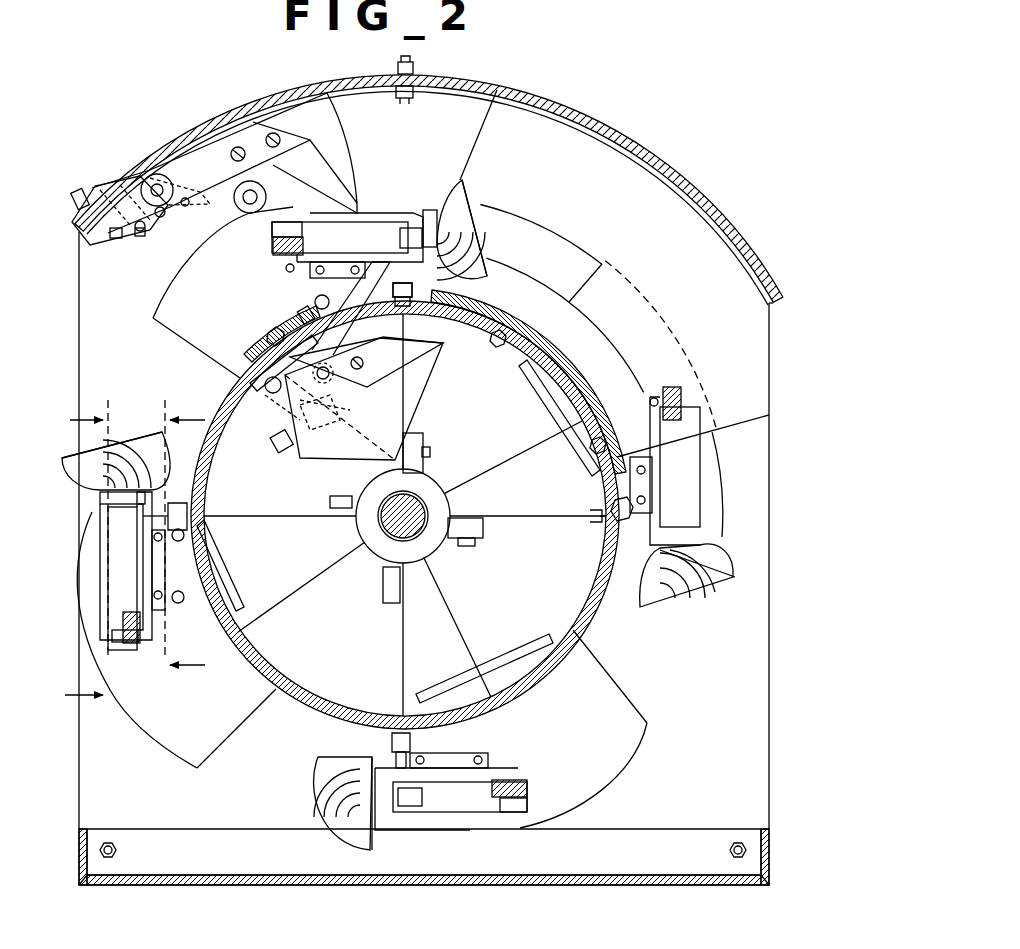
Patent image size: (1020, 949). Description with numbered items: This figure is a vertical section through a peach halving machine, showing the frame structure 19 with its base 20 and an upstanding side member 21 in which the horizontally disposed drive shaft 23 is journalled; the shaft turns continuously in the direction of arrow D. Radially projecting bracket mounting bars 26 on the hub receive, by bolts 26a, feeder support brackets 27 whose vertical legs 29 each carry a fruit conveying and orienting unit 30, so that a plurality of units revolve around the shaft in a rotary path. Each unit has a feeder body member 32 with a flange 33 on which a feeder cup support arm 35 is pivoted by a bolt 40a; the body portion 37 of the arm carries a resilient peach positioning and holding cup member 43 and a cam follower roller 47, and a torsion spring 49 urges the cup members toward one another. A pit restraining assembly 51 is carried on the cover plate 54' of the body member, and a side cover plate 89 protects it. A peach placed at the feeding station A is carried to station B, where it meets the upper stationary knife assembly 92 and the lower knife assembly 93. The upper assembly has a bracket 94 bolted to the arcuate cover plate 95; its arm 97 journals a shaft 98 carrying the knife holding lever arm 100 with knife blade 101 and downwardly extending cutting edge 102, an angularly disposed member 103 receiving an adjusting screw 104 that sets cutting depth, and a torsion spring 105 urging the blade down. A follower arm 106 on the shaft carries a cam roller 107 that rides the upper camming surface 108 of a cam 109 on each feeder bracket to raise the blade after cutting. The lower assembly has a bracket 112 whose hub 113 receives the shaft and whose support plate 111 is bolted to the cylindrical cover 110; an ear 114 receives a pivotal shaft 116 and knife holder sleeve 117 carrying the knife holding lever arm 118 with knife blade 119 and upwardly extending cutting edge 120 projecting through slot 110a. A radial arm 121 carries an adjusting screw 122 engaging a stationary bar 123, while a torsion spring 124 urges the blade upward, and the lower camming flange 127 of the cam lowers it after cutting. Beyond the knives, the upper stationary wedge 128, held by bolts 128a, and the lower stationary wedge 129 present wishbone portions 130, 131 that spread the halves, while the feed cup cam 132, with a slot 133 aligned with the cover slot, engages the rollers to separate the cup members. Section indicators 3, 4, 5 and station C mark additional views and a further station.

The frame structure 19 is at (105, 890).
The base 20 is at (180, 849).
The side member 21 is at (717, 755).
The drive shaft 23 is at (410, 525).
The bracket mounting bar 26 is at (424, 440).
The bolt 26a is at (431, 452).
The feeder support bracket 27 is at (525, 445).
The vertical leg 29 is at (403, 382).
The fruit conveying and orienting unit 30 is at (130, 430).
The feeder body member 32 is at (118, 547).
The flange 33 is at (112, 634).
The feeder cup support arm 35 is at (270, 258).
The body portion 37 is at (150, 565).
The bolt 40a is at (652, 400).
The peach positioning and holding cup member 43 is at (85, 466).
The cam follower roller 47 is at (182, 504).
The torsion spring 49 is at (135, 643).
The pit restraining assembly 51 is at (430, 206).
The cover plate 54' is at (246, 515).
The side cover plate 89 is at (118, 567).
The upper stationary knife assembly 92 is at (362, 138).
The lower knife assembly 93 is at (448, 345).
The bracket 94 is at (80, 237).
The arcuate cover plate 95 is at (258, 93).
The arm 97 is at (115, 200).
The shaft 98 is at (155, 186).
The knife holding lever arm 100 is at (209, 163).
The knife blade 101 is at (305, 155).
The cutting edge 102 is at (310, 176).
The angularly disposed member 103 is at (118, 240).
The adjusting screw 104 is at (145, 238).
The torsion spring 105 is at (163, 218).
The follower arm 106 is at (220, 198).
The cam roller 107 is at (262, 205).
The upper camming surface 108 is at (175, 274).
The cam 109 is at (461, 516).
The cylindrical cover 110 is at (340, 718).
The slot 110a is at (430, 310).
The support plate 111 is at (300, 609).
The bracket 112 is at (320, 458).
The hub 113 is at (428, 490).
The ear 114 is at (364, 398).
The pivotal shaft 116 is at (270, 393).
The knife holder sleeve 117 is at (270, 420).
The knife holding lever arm 118 is at (372, 350).
The knife blade 119 is at (361, 308).
The cutting edge 120 is at (370, 306).
The radial arm 121 is at (298, 425).
The adjusting screw 122 is at (275, 448).
The stationary bar 123 is at (345, 412).
The torsion spring 124 is at (345, 385).
The lower camming flange 127 is at (262, 365).
The upper stationary wedge 128 is at (662, 155).
The bolt 128a is at (415, 66).
The lower stationary wedge 129 is at (548, 290).
The wishbone portion 130 is at (592, 181).
The wishbone portion 131 is at (557, 324).
The feed cup cam 132 is at (260, 345).
The slot 133 is at (312, 305).
The feeding station A is at (72, 450).
The station B is at (470, 176).
The brake station C is at (732, 570).
The arrow D is at (220, 380).
The section line 3- 3 is at (115, 313).
The section line 4 is at (185, 542).
The section line 5 is at (86, 560).